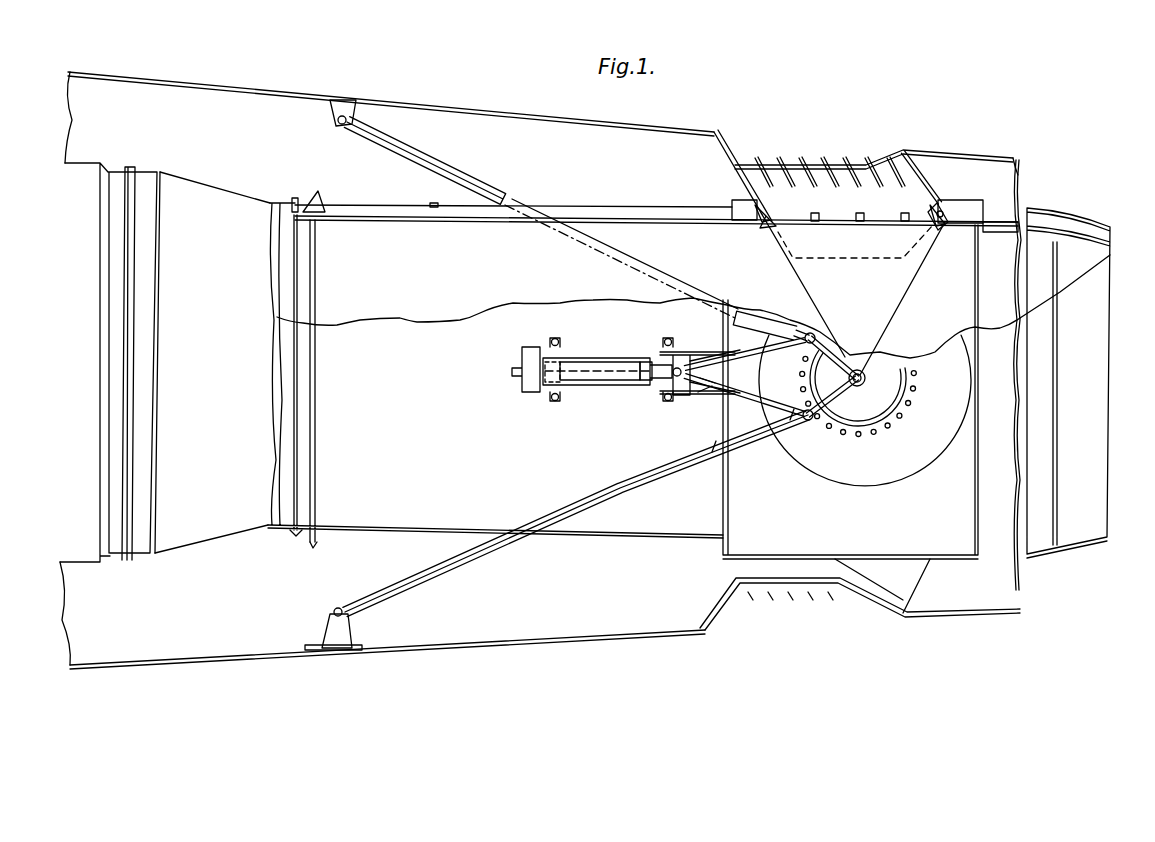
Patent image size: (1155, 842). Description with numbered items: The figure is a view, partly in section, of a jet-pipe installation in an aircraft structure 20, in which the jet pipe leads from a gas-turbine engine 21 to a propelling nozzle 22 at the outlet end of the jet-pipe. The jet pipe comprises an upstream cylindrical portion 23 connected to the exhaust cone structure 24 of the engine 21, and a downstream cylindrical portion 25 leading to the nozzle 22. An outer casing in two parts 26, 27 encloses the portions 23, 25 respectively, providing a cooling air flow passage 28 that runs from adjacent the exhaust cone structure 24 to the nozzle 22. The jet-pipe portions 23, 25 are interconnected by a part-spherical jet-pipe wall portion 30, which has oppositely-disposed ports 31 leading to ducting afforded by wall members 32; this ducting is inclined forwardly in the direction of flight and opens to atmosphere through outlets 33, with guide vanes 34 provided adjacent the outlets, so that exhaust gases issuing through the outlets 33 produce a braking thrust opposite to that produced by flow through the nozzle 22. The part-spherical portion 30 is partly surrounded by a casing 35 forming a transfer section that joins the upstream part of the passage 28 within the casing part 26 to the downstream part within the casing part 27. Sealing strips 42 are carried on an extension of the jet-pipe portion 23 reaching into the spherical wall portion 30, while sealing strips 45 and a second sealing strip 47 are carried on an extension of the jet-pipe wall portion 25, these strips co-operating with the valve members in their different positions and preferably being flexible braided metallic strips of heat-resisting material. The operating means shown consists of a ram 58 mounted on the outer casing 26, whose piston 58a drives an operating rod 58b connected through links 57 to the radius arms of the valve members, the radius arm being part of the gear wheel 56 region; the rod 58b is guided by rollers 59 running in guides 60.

The aircraft structure 20 is at (252, 90).
The gas-turbine engine 21 is at (90, 168).
The propelling nozzle 22 is at (1055, 548).
The upstream cylindrical portion 23 is at (405, 222).
The exhaust cone structure 24 is at (220, 200).
The downstream cylindrical portion 25 is at (1009, 200).
The outer casing part 26 is at (560, 205).
The outer casing part 27 is at (1037, 210).
The cooling air flow passage 28 is at (410, 205).
The part-spherical jet-pipe wall portion 30 is at (730, 205).
The ports 31 is at (905, 200).
The wall members 32 is at (765, 165).
The outlets 33 is at (820, 148).
The guide vanes 34 is at (790, 156).
The casing 35 is at (998, 210).
The sealing strips 42 is at (757, 222).
The sealing strips 45 is at (950, 226).
The second sealing strip 47 is at (940, 232).
The gear wheel 56 is at (833, 425).
The links 57 is at (712, 388).
The ram 58 is at (562, 378).
The piston 58a is at (558, 358).
The operating rod 58b is at (650, 362).
The rollers 59 is at (660, 360).
The guides 60 is at (690, 352).